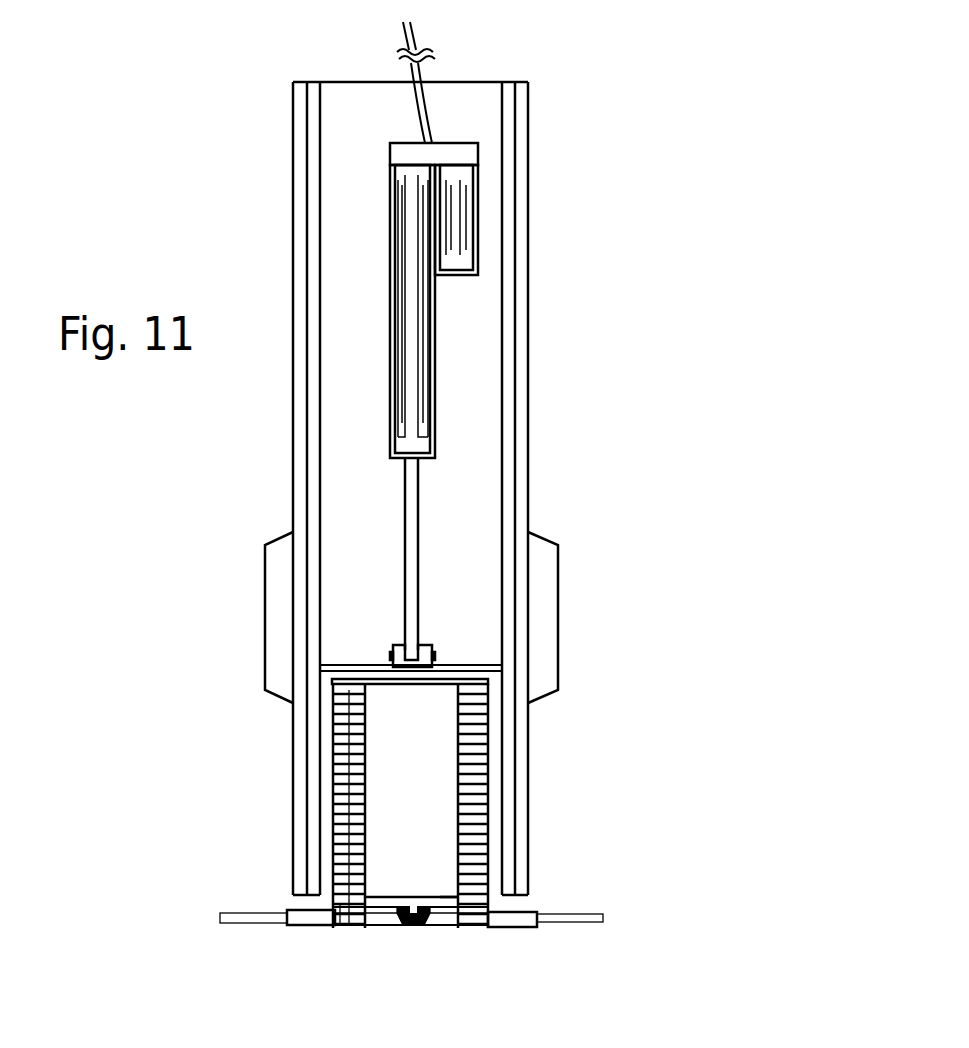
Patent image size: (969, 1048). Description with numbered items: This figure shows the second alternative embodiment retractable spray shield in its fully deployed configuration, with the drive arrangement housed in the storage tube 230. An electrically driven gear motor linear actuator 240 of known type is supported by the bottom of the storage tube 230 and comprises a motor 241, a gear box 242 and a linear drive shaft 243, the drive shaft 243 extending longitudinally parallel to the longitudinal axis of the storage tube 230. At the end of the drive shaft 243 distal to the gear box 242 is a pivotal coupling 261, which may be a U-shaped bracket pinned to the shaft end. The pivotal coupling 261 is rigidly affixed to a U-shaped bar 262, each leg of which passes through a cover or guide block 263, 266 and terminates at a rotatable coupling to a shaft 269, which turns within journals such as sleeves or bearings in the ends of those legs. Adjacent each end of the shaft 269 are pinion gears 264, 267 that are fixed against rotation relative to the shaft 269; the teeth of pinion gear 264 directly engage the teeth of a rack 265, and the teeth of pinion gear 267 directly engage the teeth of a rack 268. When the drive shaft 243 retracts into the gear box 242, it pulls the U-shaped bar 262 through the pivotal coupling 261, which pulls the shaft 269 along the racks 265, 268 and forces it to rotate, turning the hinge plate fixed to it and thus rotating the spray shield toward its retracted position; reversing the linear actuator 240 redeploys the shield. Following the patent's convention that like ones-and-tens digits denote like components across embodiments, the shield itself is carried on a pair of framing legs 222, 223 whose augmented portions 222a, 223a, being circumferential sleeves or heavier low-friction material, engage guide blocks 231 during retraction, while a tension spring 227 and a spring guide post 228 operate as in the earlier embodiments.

The framing leg 222 is at (222, 917).
The augmented portion 222a is at (317, 918).
The framing leg 223 is at (603, 917).
The augmented portion 223a is at (536, 924).
The tension spring 227 is at (415, 925).
The spring guide post 228 is at (405, 925).
The storage tube 230 is at (540, 375).
The guide blocks 231 is at (275, 629).
The linear actuator 240 is at (488, 170).
The motor 241 is at (470, 203).
The gear box 242 is at (402, 210).
The linear drive shaft 243 is at (410, 528).
The pivotal coupling 261 is at (434, 655).
The U-shaped bar 262 is at (490, 675).
The guide block 263 is at (493, 803).
The pinion gear 264 is at (473, 908).
The rack 265 is at (463, 838).
The guide block 266 is at (328, 735).
The pinion gear 267 is at (342, 908).
The rack 268 is at (347, 765).
The shaft 269 is at (448, 902).